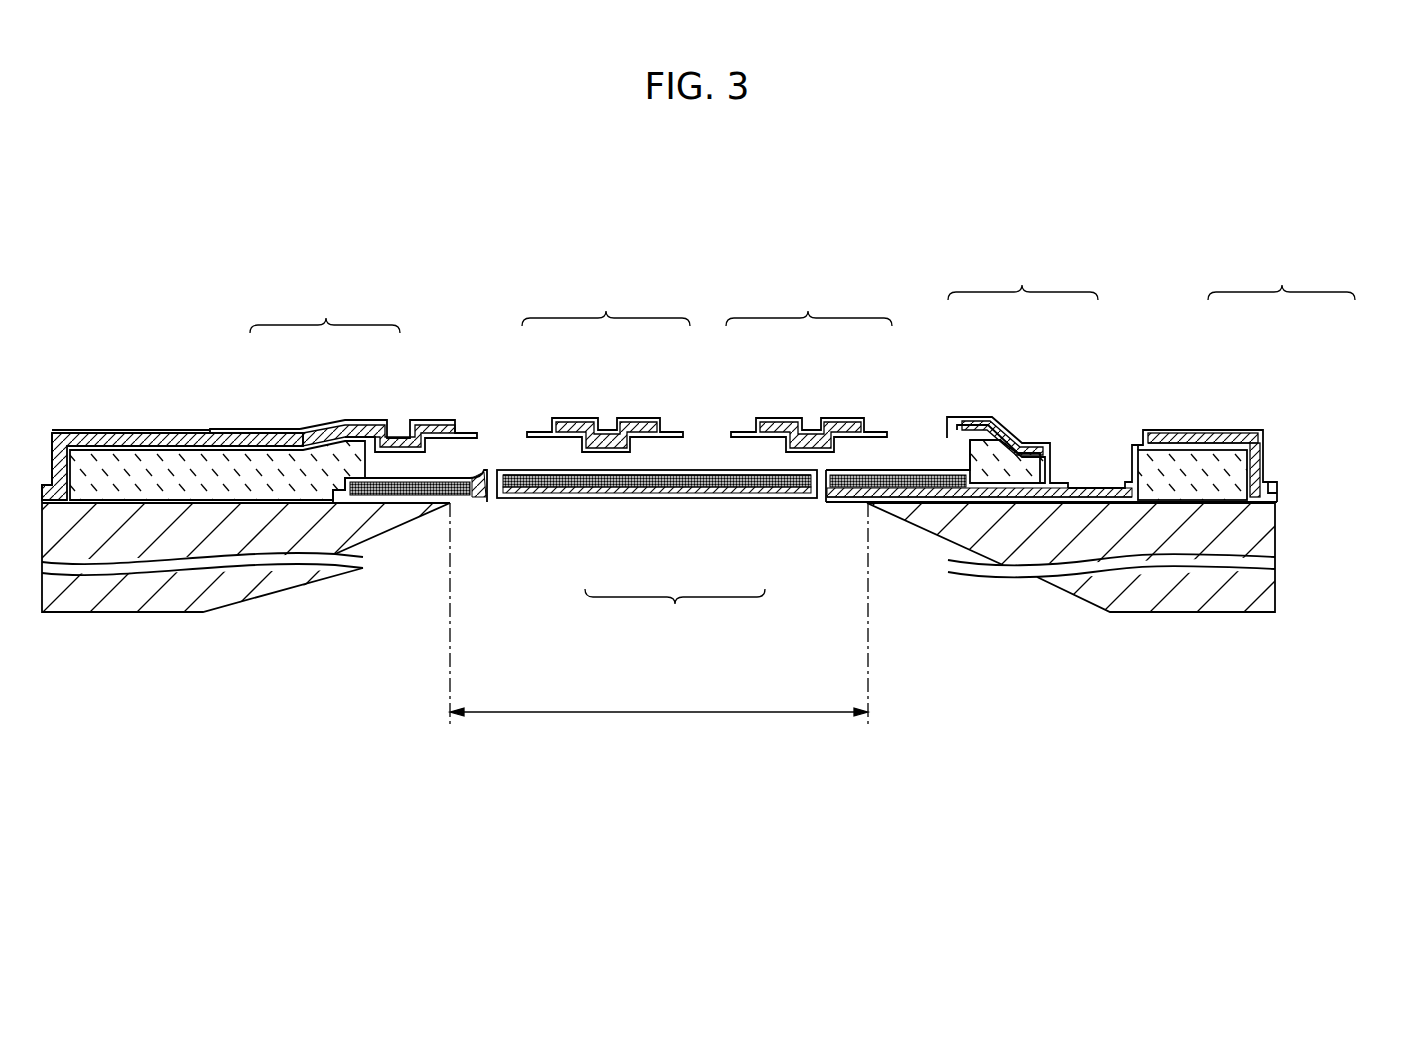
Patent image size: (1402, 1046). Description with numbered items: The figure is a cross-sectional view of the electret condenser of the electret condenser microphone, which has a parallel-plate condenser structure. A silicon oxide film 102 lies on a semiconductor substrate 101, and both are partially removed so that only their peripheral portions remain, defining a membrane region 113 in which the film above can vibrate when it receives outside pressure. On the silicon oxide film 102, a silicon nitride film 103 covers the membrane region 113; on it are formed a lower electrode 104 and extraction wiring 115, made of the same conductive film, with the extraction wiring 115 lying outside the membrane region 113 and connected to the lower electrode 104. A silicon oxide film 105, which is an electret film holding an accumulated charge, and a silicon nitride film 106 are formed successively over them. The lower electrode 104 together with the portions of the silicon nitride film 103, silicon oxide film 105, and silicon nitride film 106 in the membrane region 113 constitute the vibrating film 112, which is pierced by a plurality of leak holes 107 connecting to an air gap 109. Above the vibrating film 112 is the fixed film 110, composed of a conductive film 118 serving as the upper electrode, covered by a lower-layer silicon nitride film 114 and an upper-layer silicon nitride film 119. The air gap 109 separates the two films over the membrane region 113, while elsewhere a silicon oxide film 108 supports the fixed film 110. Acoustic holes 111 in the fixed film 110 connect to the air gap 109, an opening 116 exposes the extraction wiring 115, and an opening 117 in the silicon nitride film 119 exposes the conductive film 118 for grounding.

The semiconductor substrate 101 is at (243, 587).
The silicon oxide film 102 is at (222, 500).
The silicon nitride film 103 is at (608, 498).
The lower electrode 104 is at (653, 496).
The silicon oxide film 105 is at (708, 483).
The silicon nitride film 106 is at (745, 474).
The leak holes 107 is at (493, 498).
The silicon oxide film 108 is at (96, 447).
The air gap 109 is at (492, 470).
The fixed film 110 is at (802, 290).
The acoustic holes 111 is at (710, 450).
The vibrating film 112 is at (675, 619).
The membrane region 113 is at (659, 614).
The lower-layer silicon nitride film 114 is at (294, 432).
The extraction wiring 115 is at (900, 491).
The opening 116 is at (1100, 467).
The opening 117 is at (165, 430).
The conductive film 118 is at (365, 420).
The upper-layer silicon nitride film 119 is at (318, 427).